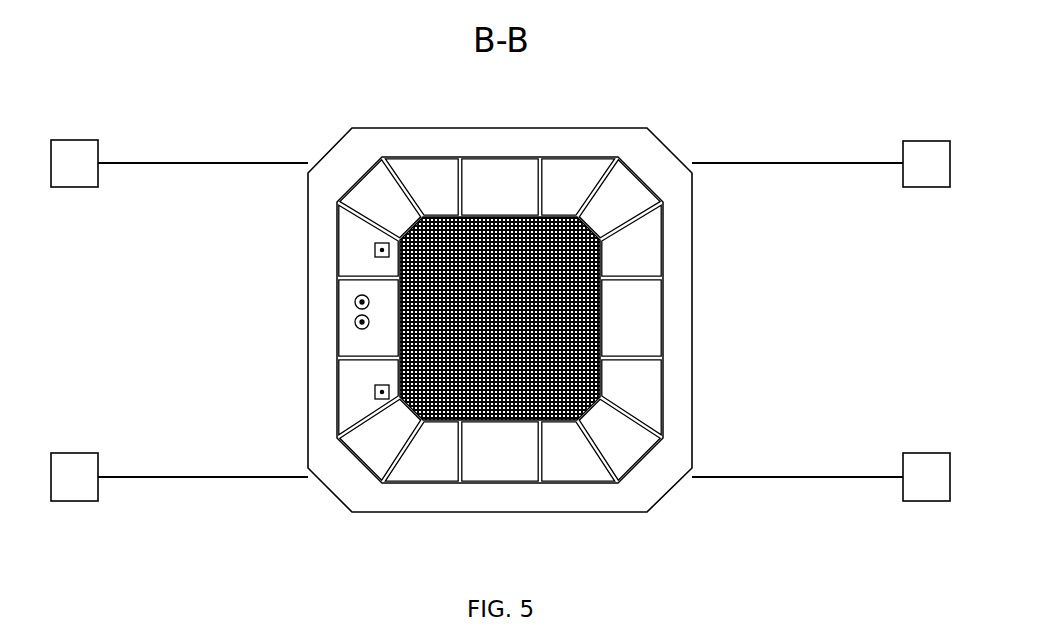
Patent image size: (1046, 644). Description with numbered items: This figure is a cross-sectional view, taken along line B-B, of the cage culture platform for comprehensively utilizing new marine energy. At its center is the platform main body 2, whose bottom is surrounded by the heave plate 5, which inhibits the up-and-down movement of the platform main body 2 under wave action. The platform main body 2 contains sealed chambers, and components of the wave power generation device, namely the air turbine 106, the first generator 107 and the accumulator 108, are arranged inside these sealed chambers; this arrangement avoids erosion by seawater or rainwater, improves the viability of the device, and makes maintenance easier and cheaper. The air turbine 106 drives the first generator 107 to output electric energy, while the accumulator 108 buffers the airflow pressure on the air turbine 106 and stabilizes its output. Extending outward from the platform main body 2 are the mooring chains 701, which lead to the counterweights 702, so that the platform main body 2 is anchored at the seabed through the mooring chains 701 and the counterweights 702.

The platform main body 2 is at (415, 210).
The heave plate 5 is at (442, 140).
The air turbine 106 is at (357, 320).
The first generator 107 is at (357, 300).
The accumulator 108 is at (377, 247).
The mooring chains 701 is at (756, 163).
The counterweights 702 is at (910, 150).